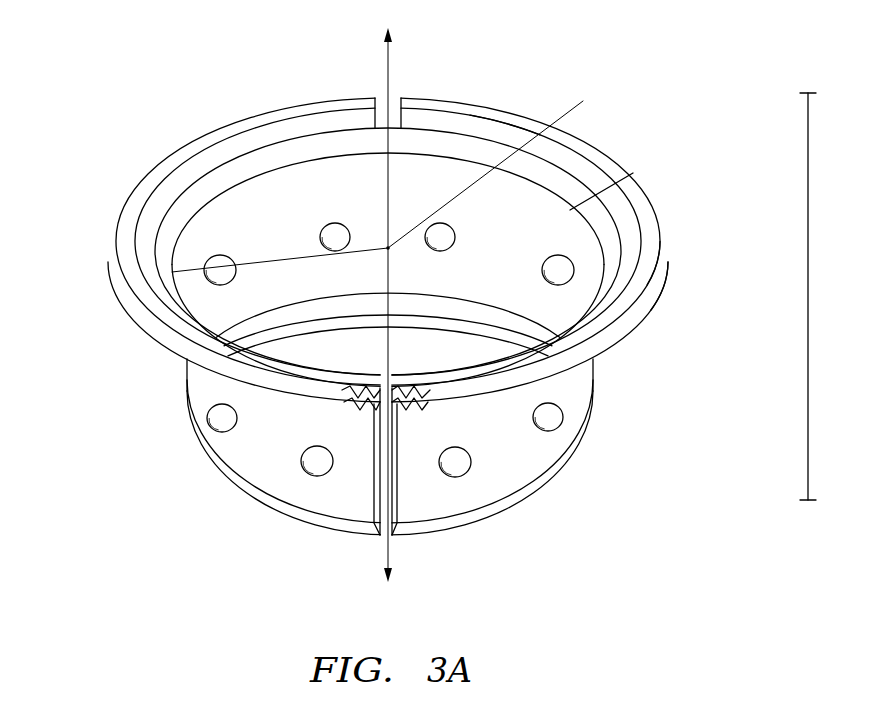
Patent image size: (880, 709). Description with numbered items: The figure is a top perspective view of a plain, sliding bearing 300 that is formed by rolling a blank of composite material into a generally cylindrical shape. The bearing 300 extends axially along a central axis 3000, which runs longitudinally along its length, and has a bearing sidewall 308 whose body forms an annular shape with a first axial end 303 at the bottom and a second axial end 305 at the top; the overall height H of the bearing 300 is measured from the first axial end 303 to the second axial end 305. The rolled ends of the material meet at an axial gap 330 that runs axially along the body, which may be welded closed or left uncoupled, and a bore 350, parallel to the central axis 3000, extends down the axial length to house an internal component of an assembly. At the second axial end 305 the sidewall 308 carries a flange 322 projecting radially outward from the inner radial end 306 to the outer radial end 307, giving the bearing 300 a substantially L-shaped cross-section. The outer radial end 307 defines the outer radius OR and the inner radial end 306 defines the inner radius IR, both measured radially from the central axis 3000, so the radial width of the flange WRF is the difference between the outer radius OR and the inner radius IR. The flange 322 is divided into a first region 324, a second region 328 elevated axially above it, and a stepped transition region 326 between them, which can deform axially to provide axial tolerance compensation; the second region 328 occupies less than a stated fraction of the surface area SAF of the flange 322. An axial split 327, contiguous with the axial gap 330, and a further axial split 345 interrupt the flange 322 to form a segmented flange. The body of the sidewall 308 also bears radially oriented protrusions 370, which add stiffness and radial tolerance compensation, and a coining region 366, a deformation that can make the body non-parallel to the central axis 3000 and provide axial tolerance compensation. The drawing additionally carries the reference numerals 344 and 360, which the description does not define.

The bearing 300 is at (667, 95).
The central axis 3000 is at (390, 62).
The first axial end 303 is at (563, 484).
The second axial end 305 is at (415, 96).
The inner radial end 306 is at (447, 328).
The outer radial end 307 is at (663, 261).
The bearing sidewall 308 is at (593, 381).
The flange 322 is at (142, 194).
The first region 324 is at (180, 307).
The stepped transition region 326 is at (638, 223).
The axial split 327 is at (383, 390).
The second region 328 is at (127, 245).
The axial gap 330 is at (398, 548).
The flange underside edge 344 is at (645, 310).
The axial split 345 is at (383, 102).
The bore 350 is at (388, 269).
The body wall 360 is at (187, 380).
The coining region 366 is at (217, 471).
The protrusion 370 is at (213, 421).
The inner radius IR is at (312, 255).
The outer radius OR is at (508, 166).
The surface area of the flange SAF is at (513, 108).
The radial width of the flange WRF is at (636, 176).
The overall height H is at (812, 262).